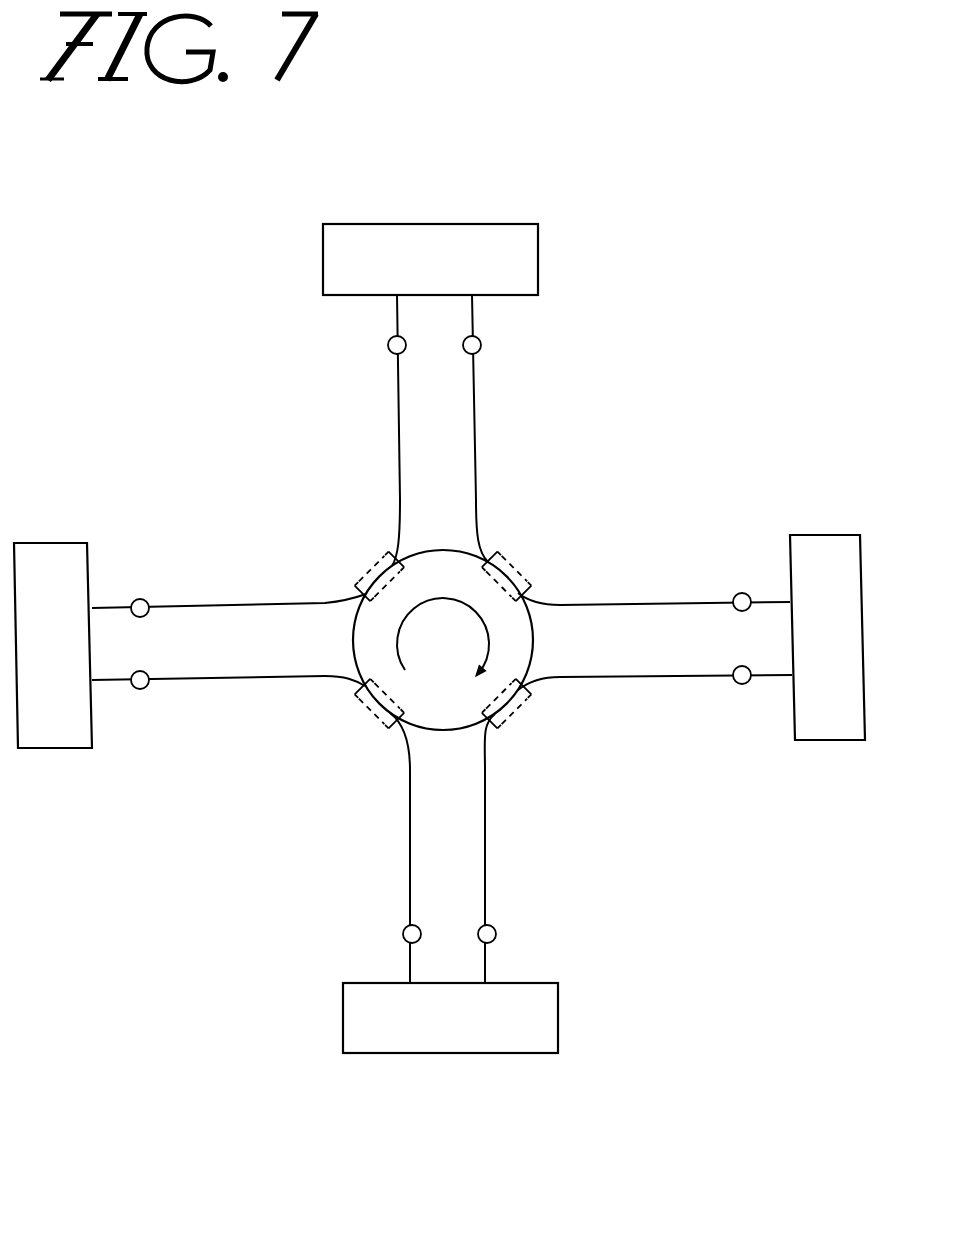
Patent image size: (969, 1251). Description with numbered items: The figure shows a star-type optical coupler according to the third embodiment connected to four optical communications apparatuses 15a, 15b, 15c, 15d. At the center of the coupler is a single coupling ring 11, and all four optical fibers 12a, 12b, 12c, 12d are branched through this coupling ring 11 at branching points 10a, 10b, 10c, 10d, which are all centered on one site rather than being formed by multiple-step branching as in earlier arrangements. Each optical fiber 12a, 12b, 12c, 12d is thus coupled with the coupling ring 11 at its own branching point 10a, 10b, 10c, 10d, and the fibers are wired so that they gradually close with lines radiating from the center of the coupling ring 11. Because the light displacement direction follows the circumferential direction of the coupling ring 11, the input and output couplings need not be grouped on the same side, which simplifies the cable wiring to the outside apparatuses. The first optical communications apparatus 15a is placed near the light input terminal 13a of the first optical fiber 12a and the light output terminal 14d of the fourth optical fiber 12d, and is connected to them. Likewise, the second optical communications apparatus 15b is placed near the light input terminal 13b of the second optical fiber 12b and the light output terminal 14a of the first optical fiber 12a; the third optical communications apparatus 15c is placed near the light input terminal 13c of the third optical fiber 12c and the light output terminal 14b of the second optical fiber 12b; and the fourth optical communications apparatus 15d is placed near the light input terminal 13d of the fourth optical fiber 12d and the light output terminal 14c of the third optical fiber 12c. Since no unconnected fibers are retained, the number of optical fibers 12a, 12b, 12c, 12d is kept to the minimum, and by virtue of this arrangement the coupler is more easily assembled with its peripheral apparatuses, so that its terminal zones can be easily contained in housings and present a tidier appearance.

The branching point 10a is at (353, 583).
The branching point 10b is at (533, 583).
The branching point 10c is at (533, 697).
The branching point 10d is at (353, 696).
The coupling ring 11 is at (533, 628).
The first optical fiber 12a is at (400, 455).
The second optical fiber 12b is at (477, 425).
The third optical fiber 12c is at (677, 678).
The fourth optical fiber 12d is at (410, 835).
The light input terminal 13a is at (140, 598).
The light input terminal 13b is at (481, 345).
The light input terminal 13c is at (742, 686).
The light input terminal 13d is at (402, 935).
The light output terminal 14a is at (387, 345).
The light output terminal 14b is at (742, 593).
The light output terminal 14c is at (496, 935).
The light output terminal 14d is at (140, 690).
The first optical communications apparatus 15a is at (50, 750).
The second optical communications apparatus 15b is at (372, 224).
The third optical communications apparatus 15c is at (825, 535).
The fourth optical communications apparatus 15d is at (385, 1055).